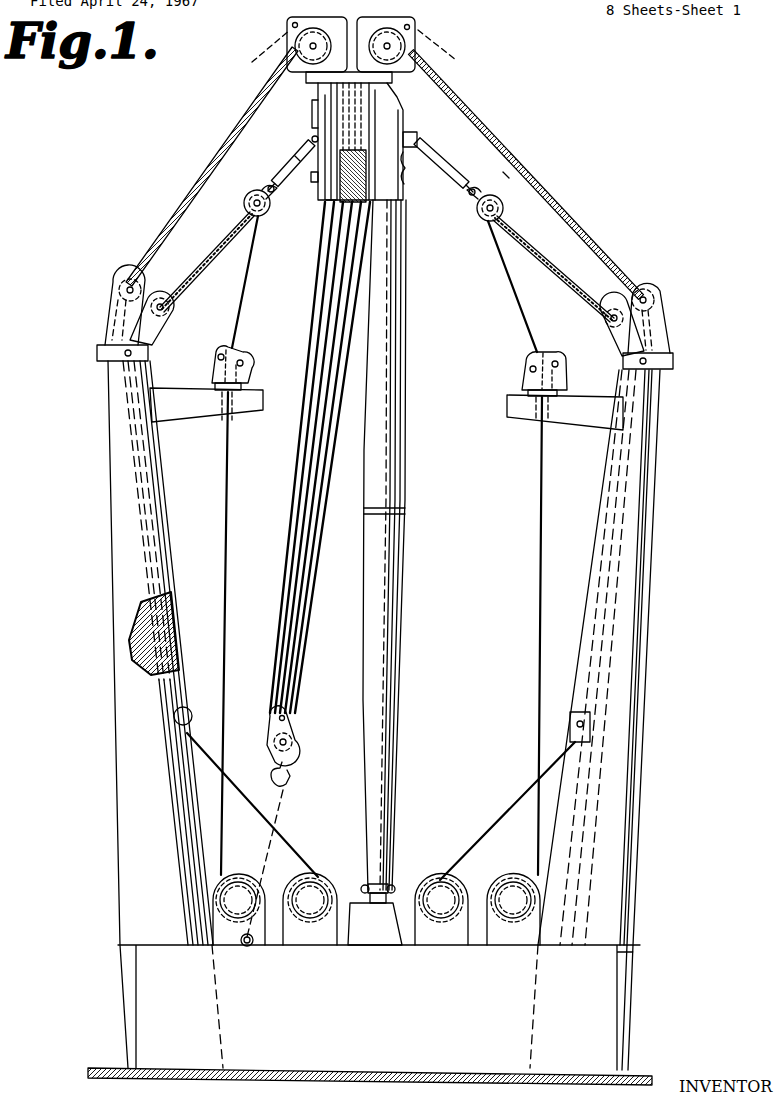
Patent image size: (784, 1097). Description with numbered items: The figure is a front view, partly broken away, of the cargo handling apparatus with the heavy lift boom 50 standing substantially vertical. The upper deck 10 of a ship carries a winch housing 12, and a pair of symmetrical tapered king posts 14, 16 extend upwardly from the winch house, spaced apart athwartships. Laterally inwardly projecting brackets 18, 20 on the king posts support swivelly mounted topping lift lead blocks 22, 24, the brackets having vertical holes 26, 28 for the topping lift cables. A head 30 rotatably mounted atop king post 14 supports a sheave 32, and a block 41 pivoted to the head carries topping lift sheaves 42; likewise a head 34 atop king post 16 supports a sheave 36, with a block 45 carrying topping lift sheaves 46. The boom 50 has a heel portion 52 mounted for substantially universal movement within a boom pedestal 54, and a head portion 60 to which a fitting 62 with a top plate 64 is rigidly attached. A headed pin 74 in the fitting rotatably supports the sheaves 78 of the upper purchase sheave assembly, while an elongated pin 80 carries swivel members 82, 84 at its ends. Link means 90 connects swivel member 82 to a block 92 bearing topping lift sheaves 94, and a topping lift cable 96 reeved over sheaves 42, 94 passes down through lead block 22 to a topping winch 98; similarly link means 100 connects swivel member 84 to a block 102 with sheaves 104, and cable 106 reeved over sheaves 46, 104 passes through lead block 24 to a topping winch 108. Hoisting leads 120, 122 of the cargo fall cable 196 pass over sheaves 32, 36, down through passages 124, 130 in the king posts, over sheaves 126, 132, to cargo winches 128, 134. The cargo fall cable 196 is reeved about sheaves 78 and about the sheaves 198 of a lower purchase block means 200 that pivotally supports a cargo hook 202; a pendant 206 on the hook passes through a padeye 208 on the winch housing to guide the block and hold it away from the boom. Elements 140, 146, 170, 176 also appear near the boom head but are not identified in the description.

The upper deck 10 is at (108, 1069).
The winch housing 12 is at (382, 1050).
The king post 14 is at (118, 830).
The king post 16 is at (640, 868).
The bracket 18 is at (200, 408).
The bracket 20 is at (598, 405).
The topping lift lead block 22 is at (244, 348).
The topping lift lead block 24 is at (524, 344).
The vertical hole 26 is at (233, 402).
The vertical hole 28 is at (532, 406).
The head 30 is at (108, 325).
The sheave 32 is at (125, 280).
The head 34 is at (660, 331).
The sheave 36 is at (655, 290).
The block 41 is at (155, 330).
The topping lift sheaves 42 is at (172, 309).
The block 45 is at (622, 340).
The topping lift sheaves 46 is at (602, 318).
The heavy lift boom 50 is at (410, 566).
The heel portion 52 is at (396, 878).
The boom pedestal 54 is at (378, 936).
The head portion 60 is at (425, 115).
The fitting 62 is at (394, 101).
The top plate 64 is at (312, 92).
The headed pin 74 is at (310, 177).
The sheaves 78 is at (324, 202).
The elongated pin 80 is at (420, 140).
The swivel member 82 is at (312, 136).
The swivel member 84 is at (406, 146).
The link means 90 is at (286, 160).
The block 92 is at (263, 196).
The topping lift sheaves 94 is at (245, 203).
The topping lift cable 96 is at (246, 262).
The topping winch 98 is at (230, 936).
The link means 100 is at (447, 172).
The block 102 is at (500, 178).
The topping lift sheaves 104 is at (478, 216).
The topping lift cable 106 is at (524, 286).
The topping winch 108 is at (510, 934).
The hoisting lead 120 is at (173, 218).
The hoisting lead 122 is at (566, 198).
The passage 124 is at (161, 631).
The sheave 126 is at (193, 716).
The cargo winch 128 is at (308, 934).
The passage 130 is at (598, 668).
The sheave 132 is at (570, 722).
The cargo winch 134 is at (440, 934).
The left cable 140 is at (260, 59).
The left winch 146 is at (282, 40).
The right cable 170 is at (444, 56).
The right winch 176 is at (424, 42).
The cargo fall cable 196 is at (304, 543).
The sheaves 198 is at (292, 750).
The lower purchase block means 200 is at (340, 702).
The cargo hook 202 is at (284, 782).
The pendant 206 is at (280, 817).
The padeye 208 is at (260, 948).